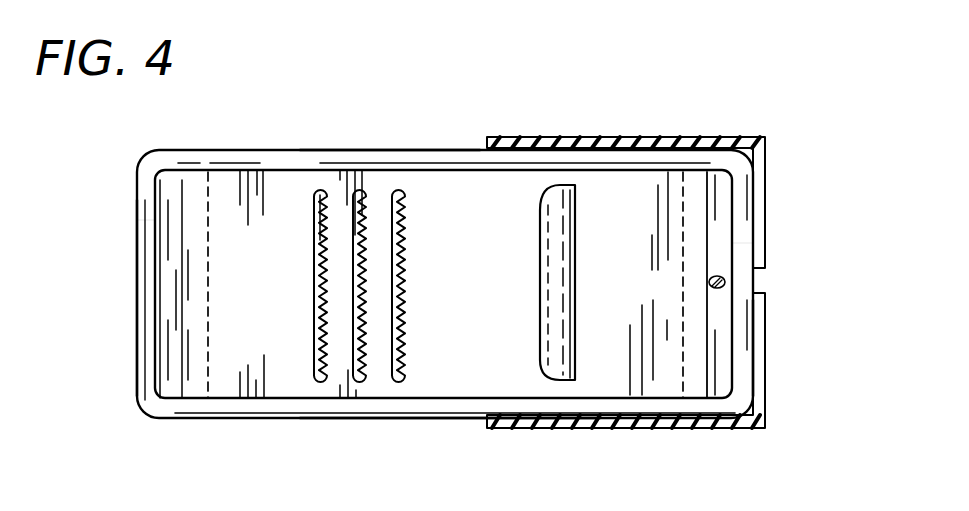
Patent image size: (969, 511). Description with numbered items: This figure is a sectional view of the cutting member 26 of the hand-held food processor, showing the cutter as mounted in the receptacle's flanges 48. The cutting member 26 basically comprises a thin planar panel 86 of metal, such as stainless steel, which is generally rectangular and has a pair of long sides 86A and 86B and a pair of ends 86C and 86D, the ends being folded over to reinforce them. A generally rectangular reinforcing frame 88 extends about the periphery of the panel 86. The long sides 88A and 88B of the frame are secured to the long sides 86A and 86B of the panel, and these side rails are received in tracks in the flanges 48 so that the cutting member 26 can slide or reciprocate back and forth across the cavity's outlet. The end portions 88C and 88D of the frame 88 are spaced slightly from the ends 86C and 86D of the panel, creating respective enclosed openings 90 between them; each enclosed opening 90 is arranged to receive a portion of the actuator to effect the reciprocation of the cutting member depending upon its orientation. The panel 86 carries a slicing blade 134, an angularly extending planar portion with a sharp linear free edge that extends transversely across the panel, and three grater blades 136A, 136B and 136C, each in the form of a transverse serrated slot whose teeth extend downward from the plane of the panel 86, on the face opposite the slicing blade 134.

The cutting member 26 is at (429, 198).
The flange 48 is at (620, 140).
The panel 86 is at (278, 385).
The long side of panel 86A is at (248, 400).
The long side of panel 86B is at (270, 182).
The end of panel 86C is at (700, 192).
The end of panel 86D is at (190, 240).
The reinforcing frame 88 is at (360, 152).
The long side of frame 88A is at (455, 412).
The long side of frame 88B is at (470, 150).
The end portion of frame 88C is at (745, 370).
The end portion of frame 88D is at (147, 350).
The enclosed opening 90 is at (168, 278).
The slicing blade 134 is at (572, 318).
The grater blade 136A is at (400, 335).
The grater blade 136B is at (363, 267).
The grater blade 136C is at (320, 292).